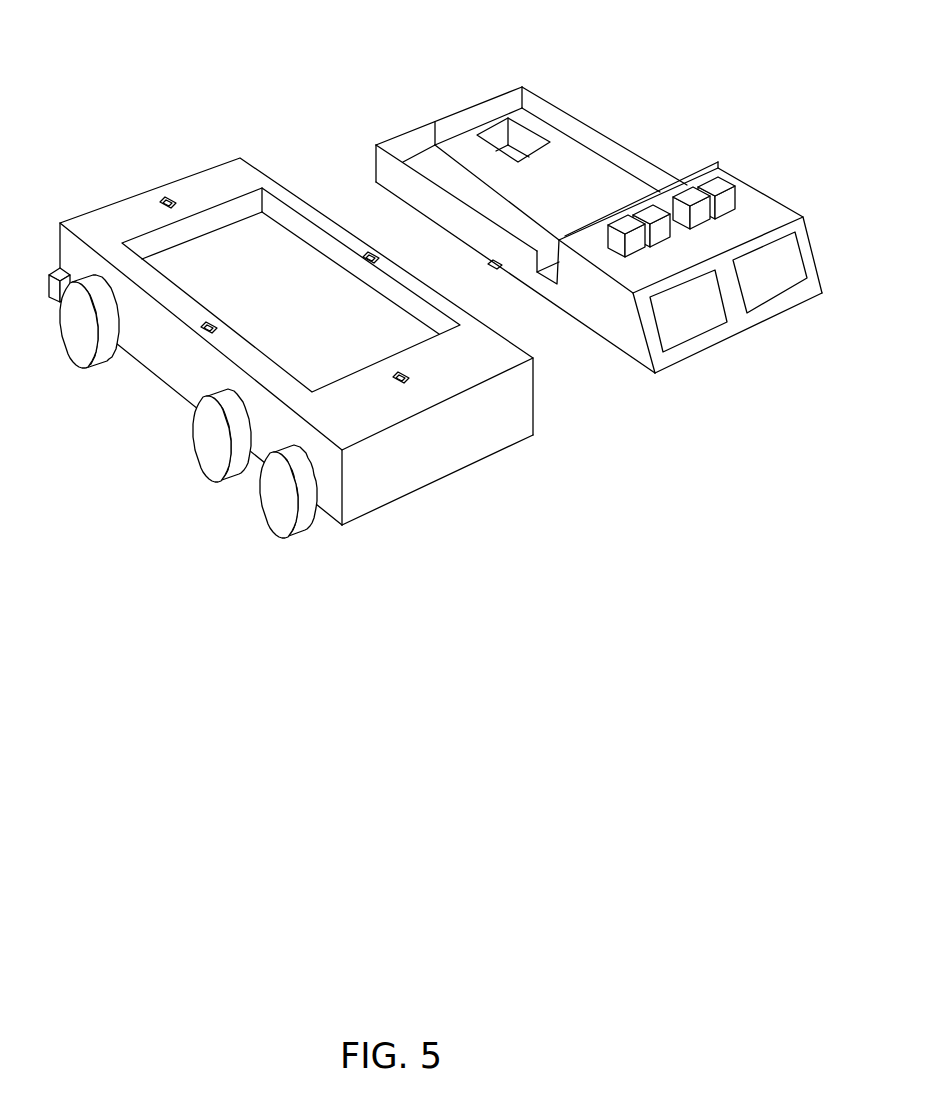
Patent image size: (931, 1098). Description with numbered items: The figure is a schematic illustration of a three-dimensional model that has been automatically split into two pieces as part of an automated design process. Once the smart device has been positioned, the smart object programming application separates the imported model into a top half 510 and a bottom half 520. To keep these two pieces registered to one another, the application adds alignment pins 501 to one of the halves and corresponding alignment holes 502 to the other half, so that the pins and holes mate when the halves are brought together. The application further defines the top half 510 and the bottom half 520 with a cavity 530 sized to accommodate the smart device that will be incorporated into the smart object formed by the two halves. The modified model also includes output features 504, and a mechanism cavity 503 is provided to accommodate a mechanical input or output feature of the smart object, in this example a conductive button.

The top half 510 is at (420, 52).
The bottom half 520 is at (150, 546).
The cavity 530 is at (265, 247).
The alignment pins 501 is at (510, 298).
The alignment holes 502 is at (161, 196).
The mechanism cavity 503 is at (552, 116).
The output features 504 is at (737, 182).